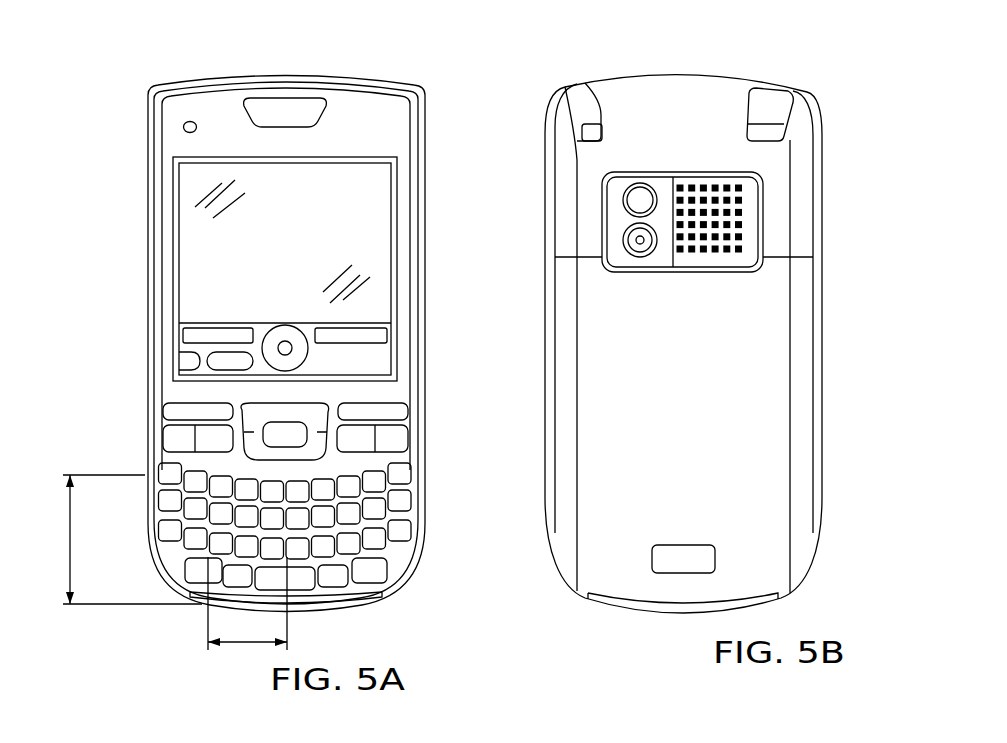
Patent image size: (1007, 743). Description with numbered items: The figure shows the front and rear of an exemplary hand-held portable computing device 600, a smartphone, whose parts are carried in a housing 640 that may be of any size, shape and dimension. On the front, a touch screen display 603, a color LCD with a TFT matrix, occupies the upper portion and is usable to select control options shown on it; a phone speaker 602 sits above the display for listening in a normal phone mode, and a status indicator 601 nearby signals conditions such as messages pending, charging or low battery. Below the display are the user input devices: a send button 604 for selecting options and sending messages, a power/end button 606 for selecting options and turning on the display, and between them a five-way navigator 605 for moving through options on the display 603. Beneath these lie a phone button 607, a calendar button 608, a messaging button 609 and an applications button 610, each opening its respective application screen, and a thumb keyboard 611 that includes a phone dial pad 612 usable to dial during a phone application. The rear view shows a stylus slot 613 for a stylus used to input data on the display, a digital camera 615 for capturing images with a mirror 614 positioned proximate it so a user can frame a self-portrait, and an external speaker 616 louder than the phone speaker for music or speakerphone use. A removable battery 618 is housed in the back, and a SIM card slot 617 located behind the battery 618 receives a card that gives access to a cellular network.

In FIG. 5A, the hand-held portable computing device 600 is at (105, 318).
In FIG. 5A, the status indicator 601 is at (177, 118).
In FIG. 5A, the phone speaker 602 is at (282, 92).
In FIG. 5A, the touch screen display 603 is at (277, 245).
In FIG. 5A, the send button 604 is at (195, 400).
In FIG. 5A, the 5-way navigator 605 is at (307, 417).
In FIG. 5A, the power/end button 606 is at (380, 395).
In FIG. 5A, the phone button 607 is at (157, 447).
In FIG. 5A, the calendar button 608 is at (223, 463).
In FIG. 5A, the messaging button 609 is at (286, 526).
In FIG. 5A, the applications button 610 is at (410, 447).
In FIG. 5A, the thumb keyboard 611 is at (62, 542).
In FIG. 5A, the phone dial pad 612 is at (248, 648).
In FIG. 5B, the stylus slot 613 is at (573, 80).
In FIG. 5B, the mirror 614 is at (615, 200).
In FIG. 5B, the digital camera 615 is at (625, 257).
In FIG. 5B, the external speaker 616 is at (760, 205).
In FIG. 5B, the SIM card slot 617 is at (763, 472).
In FIG. 5B, the removable battery 618 is at (680, 577).
In FIG. 5B, the housing 640 is at (538, 585).